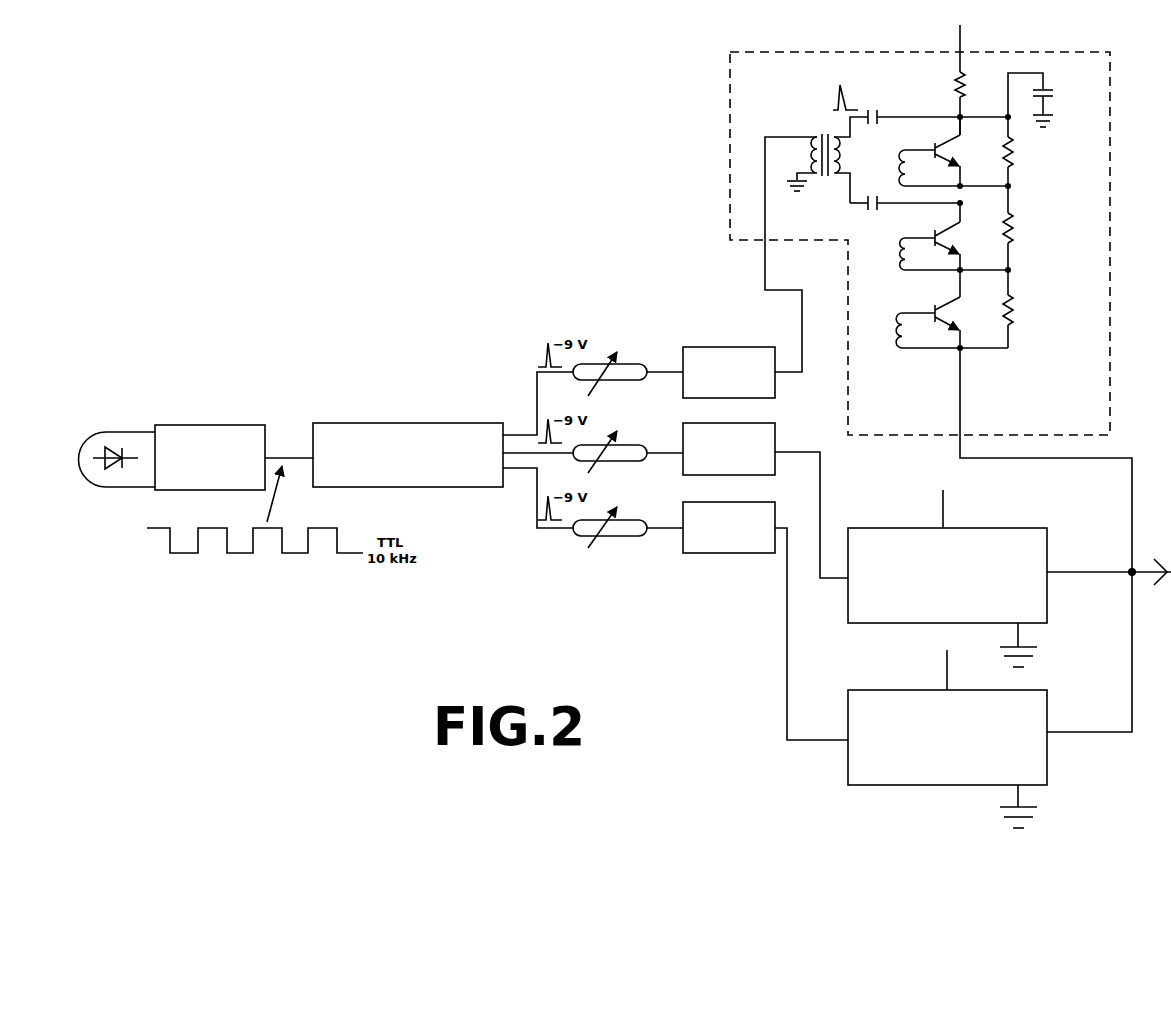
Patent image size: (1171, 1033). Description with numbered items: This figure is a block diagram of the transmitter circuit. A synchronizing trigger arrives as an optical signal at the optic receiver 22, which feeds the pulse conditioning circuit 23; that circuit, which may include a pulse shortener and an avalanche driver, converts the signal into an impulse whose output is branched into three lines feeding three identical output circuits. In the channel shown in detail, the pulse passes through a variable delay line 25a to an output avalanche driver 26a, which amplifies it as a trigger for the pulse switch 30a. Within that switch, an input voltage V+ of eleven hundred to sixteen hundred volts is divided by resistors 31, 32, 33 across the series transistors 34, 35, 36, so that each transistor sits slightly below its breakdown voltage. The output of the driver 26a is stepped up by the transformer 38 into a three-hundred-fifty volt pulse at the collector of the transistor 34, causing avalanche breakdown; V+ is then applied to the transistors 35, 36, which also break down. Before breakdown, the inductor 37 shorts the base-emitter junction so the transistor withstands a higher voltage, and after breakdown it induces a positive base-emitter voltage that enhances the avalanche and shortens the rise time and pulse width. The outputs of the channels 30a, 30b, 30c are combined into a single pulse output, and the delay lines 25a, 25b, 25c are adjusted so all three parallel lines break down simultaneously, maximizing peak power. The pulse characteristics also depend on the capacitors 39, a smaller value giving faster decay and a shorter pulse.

The optic receiver 22 is at (172, 447).
The pulse conditioning circuit 23 is at (408, 446).
The variable delay line 25a is at (610, 355).
The variable delay line 25b is at (620, 446).
The variable delay line 25c is at (604, 537).
The output avalanche driver 26a is at (729, 421).
The pulse switch 30a is at (931, 366).
The channel 30b is at (947, 574).
The channel 30c is at (947, 735).
The resistor 31 is at (1023, 151).
The resistor 32 is at (1023, 228).
The resistor 33 is at (1027, 309).
The transistor 34 is at (955, 151).
The transistor 35 is at (918, 236).
The transistor 36 is at (926, 309).
The inductor 37 is at (911, 168).
The transformer 38 is at (827, 160).
The capacitor 39 is at (1042, 96).